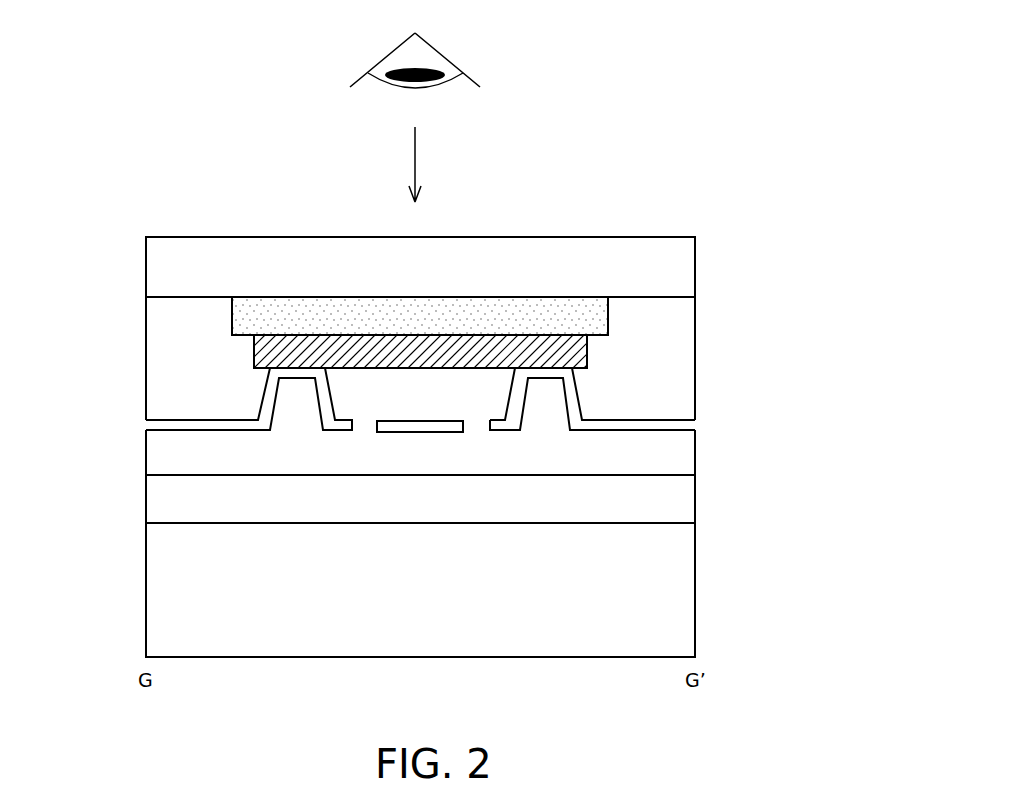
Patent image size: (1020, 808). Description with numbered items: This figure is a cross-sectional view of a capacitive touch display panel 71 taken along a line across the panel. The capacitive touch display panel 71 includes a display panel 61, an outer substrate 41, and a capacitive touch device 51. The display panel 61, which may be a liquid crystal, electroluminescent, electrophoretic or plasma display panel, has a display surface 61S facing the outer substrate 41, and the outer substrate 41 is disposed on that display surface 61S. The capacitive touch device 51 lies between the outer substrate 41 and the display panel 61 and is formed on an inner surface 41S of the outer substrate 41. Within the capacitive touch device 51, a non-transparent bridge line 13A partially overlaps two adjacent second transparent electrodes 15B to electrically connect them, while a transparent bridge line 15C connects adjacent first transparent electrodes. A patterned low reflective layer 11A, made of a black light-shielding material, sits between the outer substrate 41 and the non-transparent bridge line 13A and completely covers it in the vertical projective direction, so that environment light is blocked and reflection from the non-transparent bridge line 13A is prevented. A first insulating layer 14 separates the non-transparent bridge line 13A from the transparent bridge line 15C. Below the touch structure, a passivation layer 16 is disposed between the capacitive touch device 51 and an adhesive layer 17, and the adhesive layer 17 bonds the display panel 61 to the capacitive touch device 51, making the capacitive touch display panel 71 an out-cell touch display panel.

The capacitive touch display panel 71 is at (682, 138).
The outer substrate 41 is at (683, 269).
The inner surface of the outer substrate 41S is at (188, 298).
The first insulating layer 14 is at (162, 376).
The patterned low reflective layer 11A is at (608, 300).
The non-transparent bridge line 13A is at (587, 346).
The second transparent electrodes 15B is at (148, 427).
The transparent bridge line 15C is at (442, 427).
The passivation layer 16 is at (695, 473).
The adhesive layer 17 is at (686, 505).
The display surface 61S is at (650, 524).
The display panel 61 is at (683, 610).
The capacitive touch device 51 is at (788, 286).